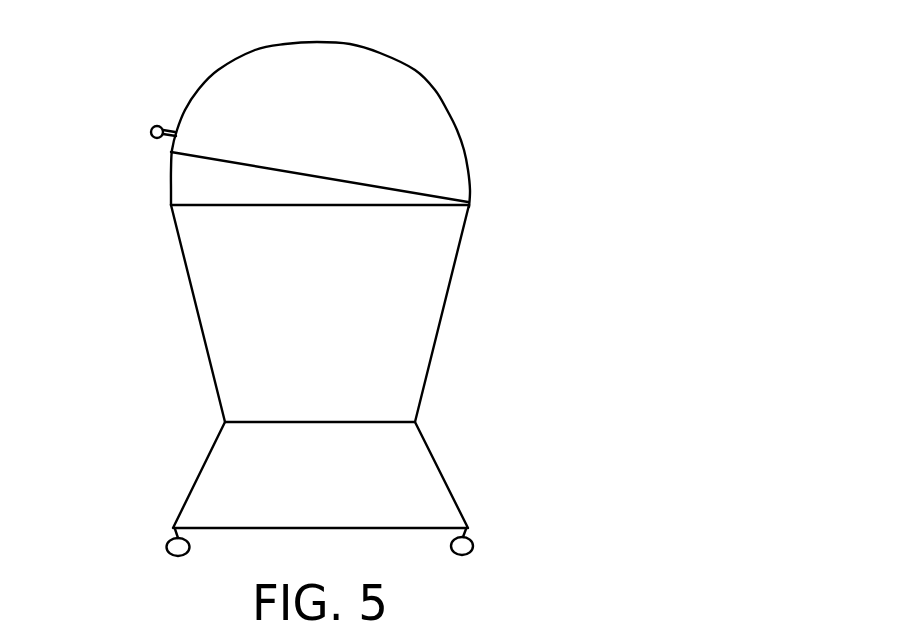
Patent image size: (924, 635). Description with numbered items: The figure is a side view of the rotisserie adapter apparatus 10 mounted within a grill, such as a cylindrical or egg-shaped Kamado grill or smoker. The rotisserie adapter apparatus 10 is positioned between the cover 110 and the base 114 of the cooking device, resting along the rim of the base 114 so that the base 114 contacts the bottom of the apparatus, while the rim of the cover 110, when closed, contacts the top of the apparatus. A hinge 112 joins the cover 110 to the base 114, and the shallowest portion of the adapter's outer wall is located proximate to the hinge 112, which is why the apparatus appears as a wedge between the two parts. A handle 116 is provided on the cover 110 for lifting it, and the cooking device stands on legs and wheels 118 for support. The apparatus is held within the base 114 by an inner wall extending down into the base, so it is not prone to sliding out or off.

The rotisserie adapter apparatus 10 is at (170, 180).
The cover 110 is at (447, 110).
The hinge 112 is at (472, 203).
The base 114 is at (443, 312).
The handle 116 is at (155, 125).
The legs and wheels 118 is at (442, 473).